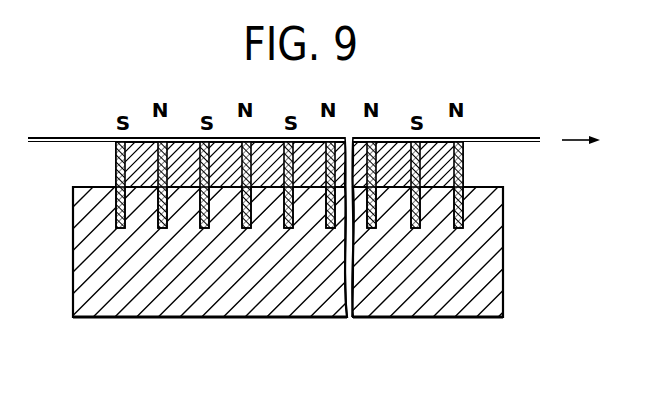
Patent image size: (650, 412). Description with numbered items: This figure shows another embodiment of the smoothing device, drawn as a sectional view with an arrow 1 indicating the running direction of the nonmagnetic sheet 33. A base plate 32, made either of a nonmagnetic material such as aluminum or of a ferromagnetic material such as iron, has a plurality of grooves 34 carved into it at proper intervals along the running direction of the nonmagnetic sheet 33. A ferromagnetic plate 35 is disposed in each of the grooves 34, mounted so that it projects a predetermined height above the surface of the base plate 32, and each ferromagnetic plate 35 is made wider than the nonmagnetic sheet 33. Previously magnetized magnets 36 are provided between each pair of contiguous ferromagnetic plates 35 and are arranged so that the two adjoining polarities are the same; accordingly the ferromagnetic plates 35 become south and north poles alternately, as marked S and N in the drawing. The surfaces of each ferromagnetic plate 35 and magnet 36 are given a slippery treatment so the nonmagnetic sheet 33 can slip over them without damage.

The direction arrow 1 is at (471, 331).
The base plate 32 is at (500, 242).
The nonmagnetic sheet 33 is at (516, 137).
The grooves 34 is at (463, 207).
The ferromagnetic plate 35 is at (163, 229).
The magnets 36 is at (185, 163).